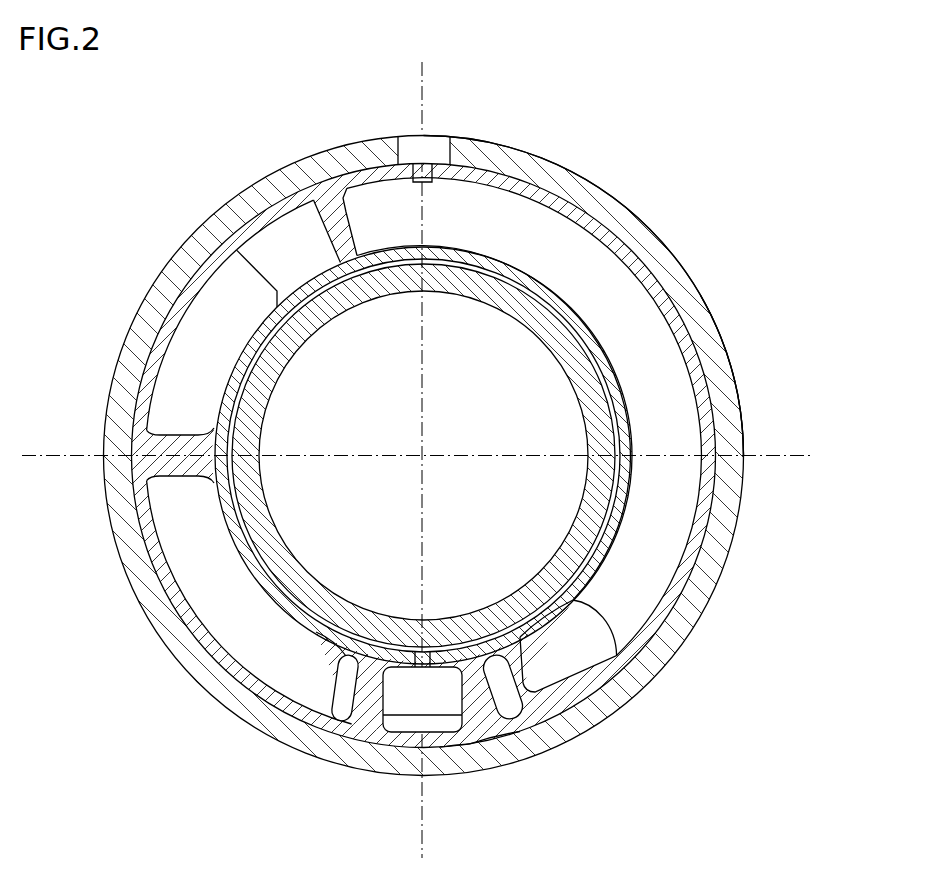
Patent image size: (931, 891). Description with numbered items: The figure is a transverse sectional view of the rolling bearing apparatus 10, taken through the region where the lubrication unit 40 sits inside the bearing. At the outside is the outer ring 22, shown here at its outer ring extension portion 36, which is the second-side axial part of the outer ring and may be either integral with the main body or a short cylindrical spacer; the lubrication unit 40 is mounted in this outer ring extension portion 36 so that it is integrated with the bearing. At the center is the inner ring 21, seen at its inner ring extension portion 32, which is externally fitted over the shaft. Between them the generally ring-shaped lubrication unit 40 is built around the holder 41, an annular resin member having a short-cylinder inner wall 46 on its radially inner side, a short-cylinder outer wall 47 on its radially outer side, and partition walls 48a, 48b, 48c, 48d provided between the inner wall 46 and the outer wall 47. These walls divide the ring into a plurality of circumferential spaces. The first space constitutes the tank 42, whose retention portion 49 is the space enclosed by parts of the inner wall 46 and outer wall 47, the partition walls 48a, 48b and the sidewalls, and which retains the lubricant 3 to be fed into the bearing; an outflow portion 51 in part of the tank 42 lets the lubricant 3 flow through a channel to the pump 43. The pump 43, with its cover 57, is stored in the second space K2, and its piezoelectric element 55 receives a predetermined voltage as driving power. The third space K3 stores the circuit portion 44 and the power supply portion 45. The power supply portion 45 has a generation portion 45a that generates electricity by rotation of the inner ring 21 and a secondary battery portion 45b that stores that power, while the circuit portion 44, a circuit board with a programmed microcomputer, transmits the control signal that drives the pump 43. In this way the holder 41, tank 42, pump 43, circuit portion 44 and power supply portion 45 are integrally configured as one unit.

The rotary electric machine 10 is at (622, 195).
The outer ring 22 is at (136, 621).
The outer ring extension portion 36 is at (138, 540).
The lubrication unit 40 is at (499, 171).
The holder 41 is at (322, 186).
The tank 42 is at (650, 344).
The pump 43 is at (382, 725).
The circuit portion 44 is at (243, 627).
The power supply portion 45 is at (162, 352).
The generation portion 45a is at (217, 318).
The secondary battery portion 45b is at (165, 405).
The inner wall 46 is at (608, 640).
The outer wall 47 is at (690, 606).
The partition wall 48a is at (527, 678).
The partition wall 48b is at (355, 192).
The partition wall 48c is at (372, 692).
The partition wall 48d is at (498, 660).
The retention portion 49 is at (629, 299).
The outflow portion 51 is at (487, 748).
The piezoelectric element 55 is at (462, 737).
The cover 57 is at (407, 720).
The inner ring 21 is at (305, 575).
The inner ring extension portion 32 is at (276, 557).
The lubricant 3 is at (600, 295).
The second space K2 is at (455, 745).
The third space K3 is at (162, 465).